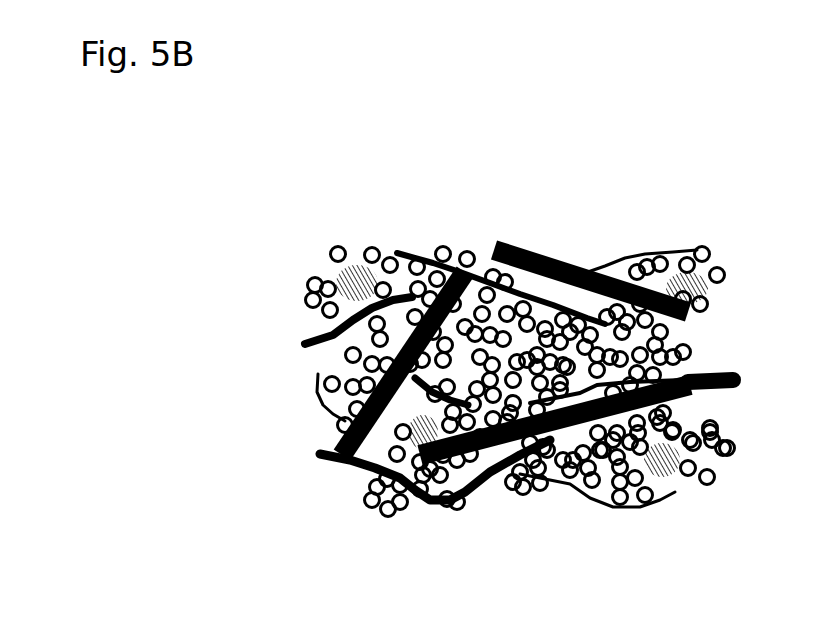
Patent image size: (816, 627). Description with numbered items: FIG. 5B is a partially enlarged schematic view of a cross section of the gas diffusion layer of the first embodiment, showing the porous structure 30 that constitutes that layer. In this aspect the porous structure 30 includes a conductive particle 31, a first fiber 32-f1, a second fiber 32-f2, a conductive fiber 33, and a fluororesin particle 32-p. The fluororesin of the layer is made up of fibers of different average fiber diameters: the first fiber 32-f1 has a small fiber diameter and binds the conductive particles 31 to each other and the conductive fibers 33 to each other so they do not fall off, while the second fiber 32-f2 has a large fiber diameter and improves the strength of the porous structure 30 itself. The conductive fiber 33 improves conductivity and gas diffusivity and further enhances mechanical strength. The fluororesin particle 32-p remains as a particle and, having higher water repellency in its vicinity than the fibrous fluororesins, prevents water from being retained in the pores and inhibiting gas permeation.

The porous structure 30 is at (546, 191).
The conductive particle 31 is at (388, 512).
The first fiber 32-f1 is at (596, 503).
The second fiber 32-f2 is at (338, 462).
The fluororesin particle 32-p is at (667, 468).
The conductive fiber 33 is at (490, 470).